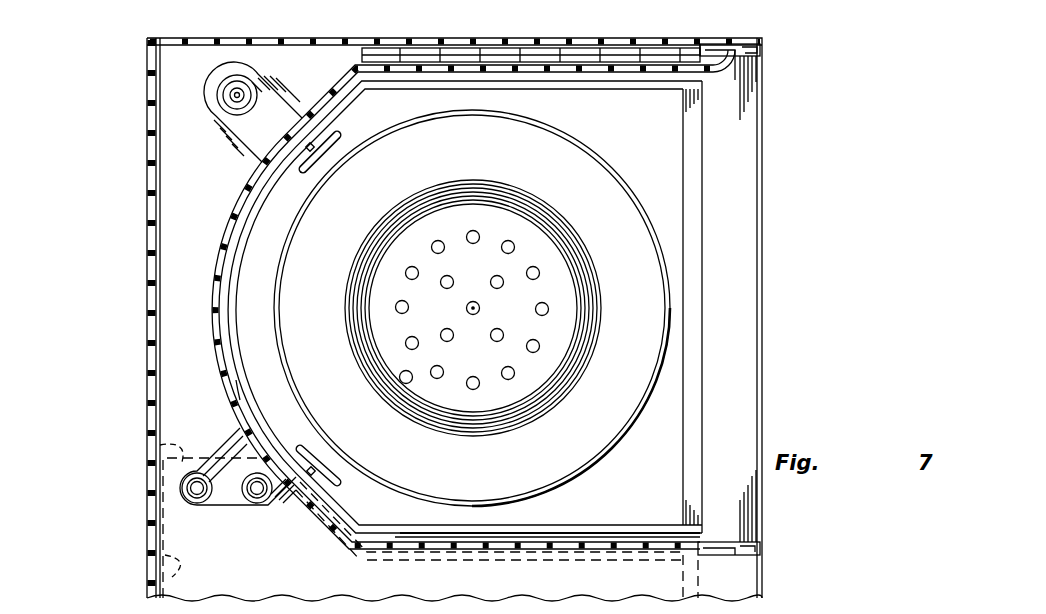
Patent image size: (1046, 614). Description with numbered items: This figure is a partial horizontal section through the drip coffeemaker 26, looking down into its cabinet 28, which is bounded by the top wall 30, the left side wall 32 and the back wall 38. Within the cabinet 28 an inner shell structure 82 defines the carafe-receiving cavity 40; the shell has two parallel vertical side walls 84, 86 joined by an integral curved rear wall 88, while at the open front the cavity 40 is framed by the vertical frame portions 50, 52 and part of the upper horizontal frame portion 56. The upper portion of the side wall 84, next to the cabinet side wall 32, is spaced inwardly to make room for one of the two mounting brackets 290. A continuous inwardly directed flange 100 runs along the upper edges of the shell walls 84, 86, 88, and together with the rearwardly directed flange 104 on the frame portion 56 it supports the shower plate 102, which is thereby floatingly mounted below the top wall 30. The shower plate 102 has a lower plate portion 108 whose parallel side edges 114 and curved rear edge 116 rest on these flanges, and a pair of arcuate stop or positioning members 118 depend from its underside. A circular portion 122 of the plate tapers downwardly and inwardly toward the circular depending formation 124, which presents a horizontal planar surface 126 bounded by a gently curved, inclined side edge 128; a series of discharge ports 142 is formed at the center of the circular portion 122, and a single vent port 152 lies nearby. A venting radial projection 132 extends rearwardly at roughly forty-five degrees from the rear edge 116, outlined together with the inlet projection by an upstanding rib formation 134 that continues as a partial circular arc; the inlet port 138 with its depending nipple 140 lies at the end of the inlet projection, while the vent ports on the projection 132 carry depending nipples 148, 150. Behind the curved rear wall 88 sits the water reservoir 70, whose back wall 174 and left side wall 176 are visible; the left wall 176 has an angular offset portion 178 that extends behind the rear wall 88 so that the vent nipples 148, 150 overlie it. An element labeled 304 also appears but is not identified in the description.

The drip coffeemaker 26 is at (145, 178).
The cabinet 28 is at (147, 326).
The top wall 30 is at (152, 124).
The side wall 32 is at (258, 38).
The back wall 38 is at (152, 256).
The carafe-receiving cavity 40 is at (607, 533).
The vertical frame portion 50 is at (722, 42).
The vertical frame portion 52 is at (762, 555).
The horizontal frame portion 56 is at (762, 239).
The water reservoir 70 is at (374, 556).
The inner shell structure 82 is at (736, 76).
The side wall 84 is at (648, 80).
The side wall 86 is at (567, 541).
The curved rear wall 88 is at (226, 300).
The inwardly directed flange 100 is at (225, 232).
The shower plate 102 is at (248, 400).
The rearwardly directed flange 104 is at (738, 330).
The lower plate portion 108 is at (240, 370).
The side edges 114 is at (537, 83).
The curved rear edge 116 is at (232, 340).
The stop or positioning members 118 is at (340, 138).
The circular portion 122 is at (613, 167).
The circular depending formation 124 is at (577, 234).
The horizontal planar surface 126 is at (567, 312).
The side edge 128 is at (580, 367).
The venting radial projection 132 is at (277, 79).
The rib formation 134 is at (227, 507).
The inlet port 138 is at (222, 100).
The nipple 140 is at (233, 94).
The discharge ports 142 is at (406, 340).
The nipple 148 is at (198, 512).
The nipple 150 is at (298, 492).
The vent port 152 is at (399, 378).
The back wall 174 is at (163, 567).
The left side wall 176 is at (577, 560).
The angular offset portion 178 is at (162, 445).
The mounting bracket 290 is at (620, 45).
The filter retainer 304 is at (496, 46).